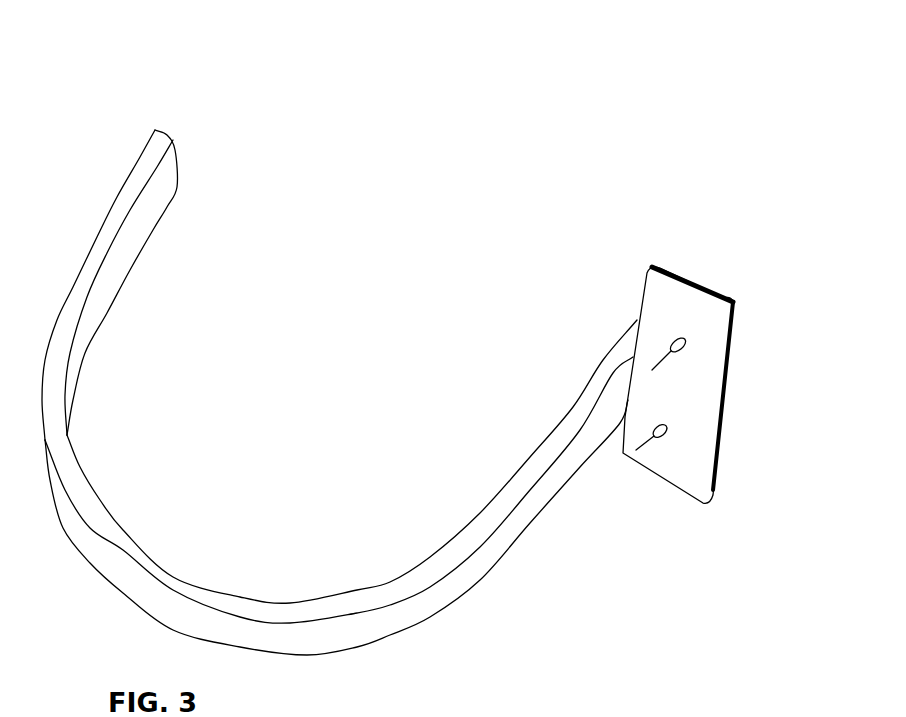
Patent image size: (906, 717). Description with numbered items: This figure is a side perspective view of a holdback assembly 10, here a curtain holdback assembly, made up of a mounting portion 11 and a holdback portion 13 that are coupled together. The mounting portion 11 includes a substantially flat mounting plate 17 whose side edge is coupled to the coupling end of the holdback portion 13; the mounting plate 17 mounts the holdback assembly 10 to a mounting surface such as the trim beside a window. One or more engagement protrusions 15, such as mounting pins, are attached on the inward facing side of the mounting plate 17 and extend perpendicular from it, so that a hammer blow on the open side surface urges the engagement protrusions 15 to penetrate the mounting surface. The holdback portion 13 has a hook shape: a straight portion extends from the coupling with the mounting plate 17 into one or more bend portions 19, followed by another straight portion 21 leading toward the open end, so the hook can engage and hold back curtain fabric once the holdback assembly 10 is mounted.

The holdback assembly 10 is at (439, 347).
The mounting portion 11 is at (729, 395).
The holdback portion 13 is at (370, 341).
The engagement protrusions 15 is at (652, 352).
The mounting plate 17 is at (693, 390).
The bend portions 19 is at (117, 473).
The straight portion 21 is at (147, 247).